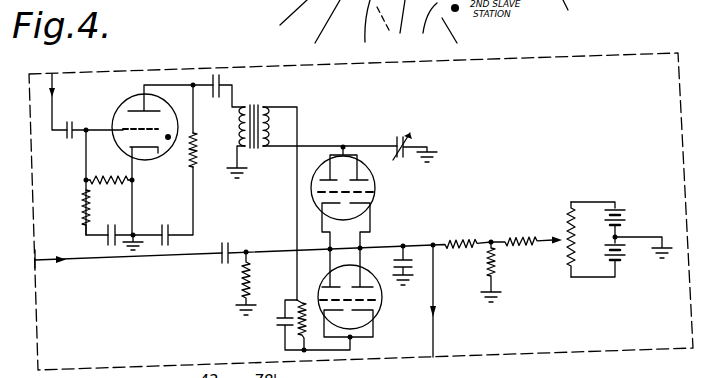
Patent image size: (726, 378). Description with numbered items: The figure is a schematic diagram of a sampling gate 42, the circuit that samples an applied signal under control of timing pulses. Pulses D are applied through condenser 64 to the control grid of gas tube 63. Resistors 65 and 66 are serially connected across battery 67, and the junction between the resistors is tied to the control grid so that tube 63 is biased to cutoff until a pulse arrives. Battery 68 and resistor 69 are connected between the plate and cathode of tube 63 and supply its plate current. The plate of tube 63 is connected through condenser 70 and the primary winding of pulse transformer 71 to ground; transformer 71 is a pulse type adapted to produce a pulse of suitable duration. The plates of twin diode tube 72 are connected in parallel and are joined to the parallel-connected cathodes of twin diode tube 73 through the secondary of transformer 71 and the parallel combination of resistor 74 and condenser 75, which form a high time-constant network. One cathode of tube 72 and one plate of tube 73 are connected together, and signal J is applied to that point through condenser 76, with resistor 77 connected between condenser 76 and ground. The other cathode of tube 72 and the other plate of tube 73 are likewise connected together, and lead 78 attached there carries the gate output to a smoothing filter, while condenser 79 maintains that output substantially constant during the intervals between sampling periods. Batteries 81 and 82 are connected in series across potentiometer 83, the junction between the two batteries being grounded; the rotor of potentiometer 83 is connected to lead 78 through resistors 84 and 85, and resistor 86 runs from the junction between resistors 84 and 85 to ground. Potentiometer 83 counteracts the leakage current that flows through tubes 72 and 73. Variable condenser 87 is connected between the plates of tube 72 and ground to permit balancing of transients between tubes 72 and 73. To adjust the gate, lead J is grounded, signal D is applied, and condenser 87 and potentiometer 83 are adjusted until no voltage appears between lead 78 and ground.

The sampling gate 42 is at (182, 72).
The pulses D is at (55, 106).
The signal J is at (56, 262).
The gas tube 63 is at (130, 98).
The condenser 64 is at (74, 124).
The resistor 65 is at (80, 216).
The resistor 66 is at (103, 177).
The battery 67 is at (112, 246).
The battery 68 is at (170, 246).
The resistor 69 is at (190, 156).
The condenser 70 is at (222, 80).
The pulse transformer 71 is at (258, 150).
The twin diode tube 72 is at (378, 188).
The twin diode tube 73 is at (382, 302).
The resistor 74 is at (296, 334).
The condenser 75 is at (280, 308).
The condenser 76 is at (230, 243).
The resistor 77 is at (240, 278).
The lead 78 is at (436, 332).
The condenser 79 is at (400, 256).
The battery 81 is at (622, 214).
The battery 82 is at (624, 258).
The potentiometer 83 is at (572, 214).
The resistor 84 is at (520, 240).
The resistor 85 is at (462, 242).
The resistor 86 is at (496, 266).
The variable condenser 87 is at (397, 137).